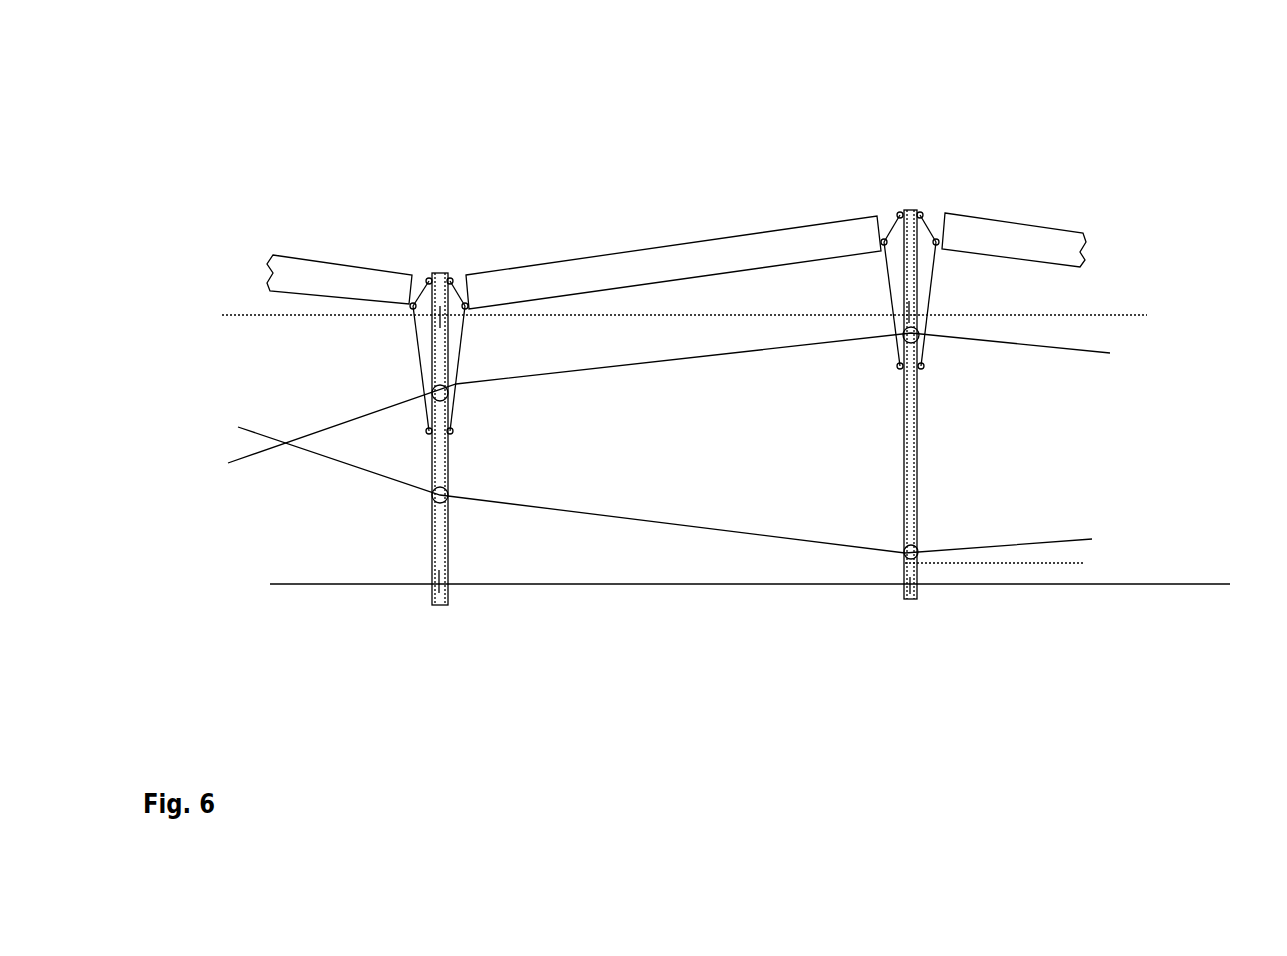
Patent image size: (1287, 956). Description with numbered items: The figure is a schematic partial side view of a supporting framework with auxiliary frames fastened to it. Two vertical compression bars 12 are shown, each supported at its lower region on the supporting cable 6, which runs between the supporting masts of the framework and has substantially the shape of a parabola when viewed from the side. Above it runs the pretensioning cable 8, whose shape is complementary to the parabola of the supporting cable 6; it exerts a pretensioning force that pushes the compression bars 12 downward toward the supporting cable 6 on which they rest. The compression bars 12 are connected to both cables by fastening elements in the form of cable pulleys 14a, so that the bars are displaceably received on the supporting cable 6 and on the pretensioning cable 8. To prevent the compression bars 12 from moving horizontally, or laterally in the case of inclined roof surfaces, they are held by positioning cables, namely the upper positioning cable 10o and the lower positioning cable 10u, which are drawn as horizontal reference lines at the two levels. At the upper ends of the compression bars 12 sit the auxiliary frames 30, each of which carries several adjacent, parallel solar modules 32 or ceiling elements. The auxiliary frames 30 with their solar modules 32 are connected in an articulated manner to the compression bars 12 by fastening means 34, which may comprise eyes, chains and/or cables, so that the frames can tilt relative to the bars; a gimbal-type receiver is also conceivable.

The supporting cable 6 is at (1040, 542).
The pretensioning cable 8 is at (1047, 345).
The upper positioning cable 10o is at (598, 316).
The lower positioning cable 10u is at (657, 531).
The compression bar 12 is at (448, 598).
The cable pulleys 14a is at (450, 396).
The auxiliary frame 30 is at (676, 180).
The solar module 32 is at (973, 227).
The fastening means 34 is at (428, 278).